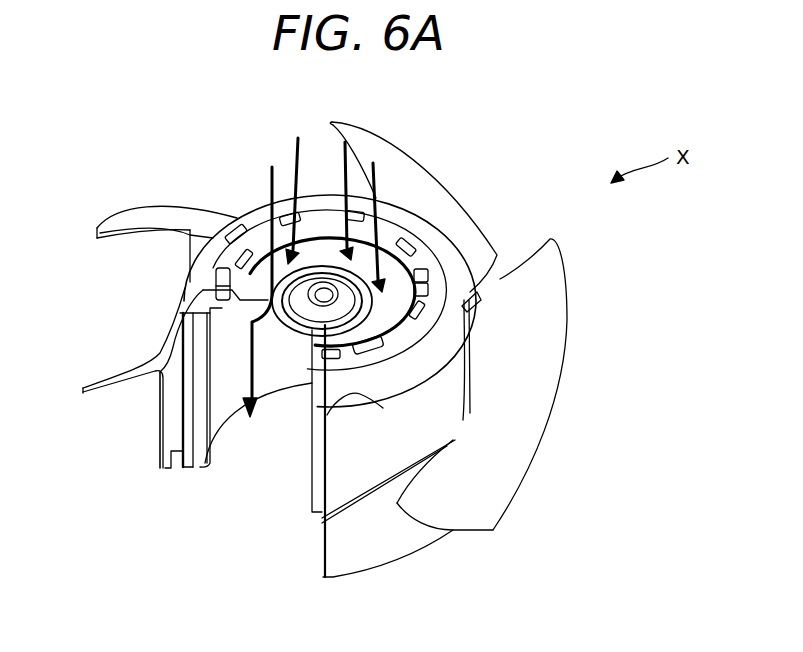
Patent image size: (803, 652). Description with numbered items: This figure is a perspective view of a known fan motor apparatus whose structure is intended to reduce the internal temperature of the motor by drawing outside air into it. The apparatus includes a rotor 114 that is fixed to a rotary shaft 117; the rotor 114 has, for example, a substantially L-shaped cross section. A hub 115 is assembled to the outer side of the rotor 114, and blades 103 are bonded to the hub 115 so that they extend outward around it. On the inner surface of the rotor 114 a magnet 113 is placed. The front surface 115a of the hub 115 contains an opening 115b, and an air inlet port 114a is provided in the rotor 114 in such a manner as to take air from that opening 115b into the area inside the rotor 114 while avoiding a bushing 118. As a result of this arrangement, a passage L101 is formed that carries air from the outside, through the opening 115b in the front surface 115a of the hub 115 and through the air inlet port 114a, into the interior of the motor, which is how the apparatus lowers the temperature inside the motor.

The blades 103 is at (560, 310).
The magnet 113 is at (205, 462).
The rotor 114 is at (183, 432).
The air inlet port 114a is at (333, 255).
The hub 115 is at (165, 413).
The front surface 115a is at (437, 240).
The opening 115b is at (368, 310).
The rotary shaft 117 is at (317, 499).
The bushing 118 is at (284, 336).
The passage L101 is at (270, 176).